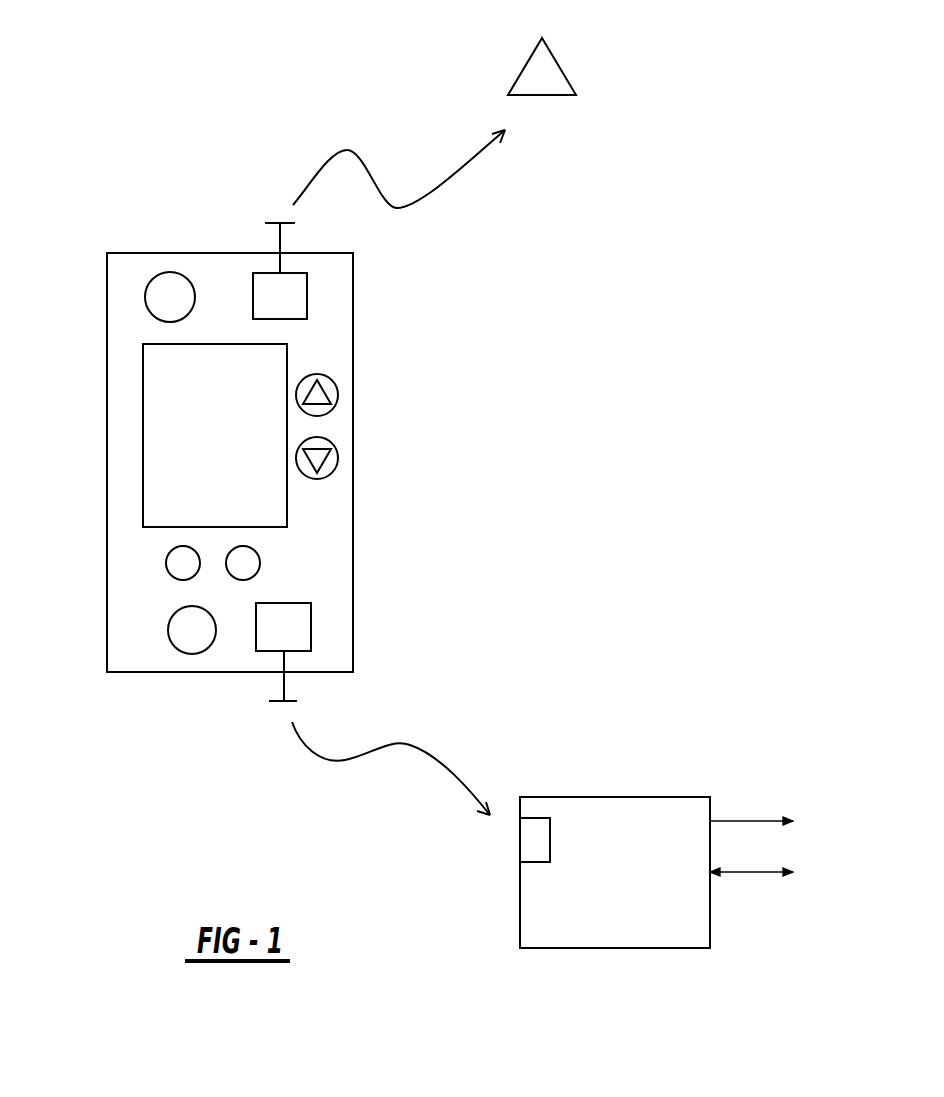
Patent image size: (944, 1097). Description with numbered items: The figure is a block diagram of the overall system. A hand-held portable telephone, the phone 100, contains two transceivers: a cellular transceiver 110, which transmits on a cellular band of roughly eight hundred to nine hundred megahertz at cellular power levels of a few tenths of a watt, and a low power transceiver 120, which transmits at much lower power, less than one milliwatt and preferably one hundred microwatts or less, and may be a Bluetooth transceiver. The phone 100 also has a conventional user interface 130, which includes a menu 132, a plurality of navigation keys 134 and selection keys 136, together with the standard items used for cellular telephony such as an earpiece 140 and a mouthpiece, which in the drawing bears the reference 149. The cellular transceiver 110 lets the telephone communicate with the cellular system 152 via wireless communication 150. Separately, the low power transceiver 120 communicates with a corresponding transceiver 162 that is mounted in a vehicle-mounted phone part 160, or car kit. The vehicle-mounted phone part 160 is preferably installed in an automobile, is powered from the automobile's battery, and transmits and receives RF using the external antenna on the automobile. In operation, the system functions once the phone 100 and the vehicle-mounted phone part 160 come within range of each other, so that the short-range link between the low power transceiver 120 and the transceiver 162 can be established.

The phone 100 is at (107, 340).
The cellular transceiver 110 is at (308, 293).
The low power transceiver 120 is at (308, 637).
The user interface 130 is at (127, 488).
The menu 132 is at (152, 368).
The navigation keys 134 is at (335, 387).
The selection keys 136 is at (166, 563).
The earpiece 140 is at (150, 280).
The microphone 149 is at (172, 638).
The wireless communication 150 is at (423, 210).
The cellular system 152 is at (560, 62).
The vehicle-mounted phone part 160 is at (582, 797).
The transceiver 162 is at (532, 833).